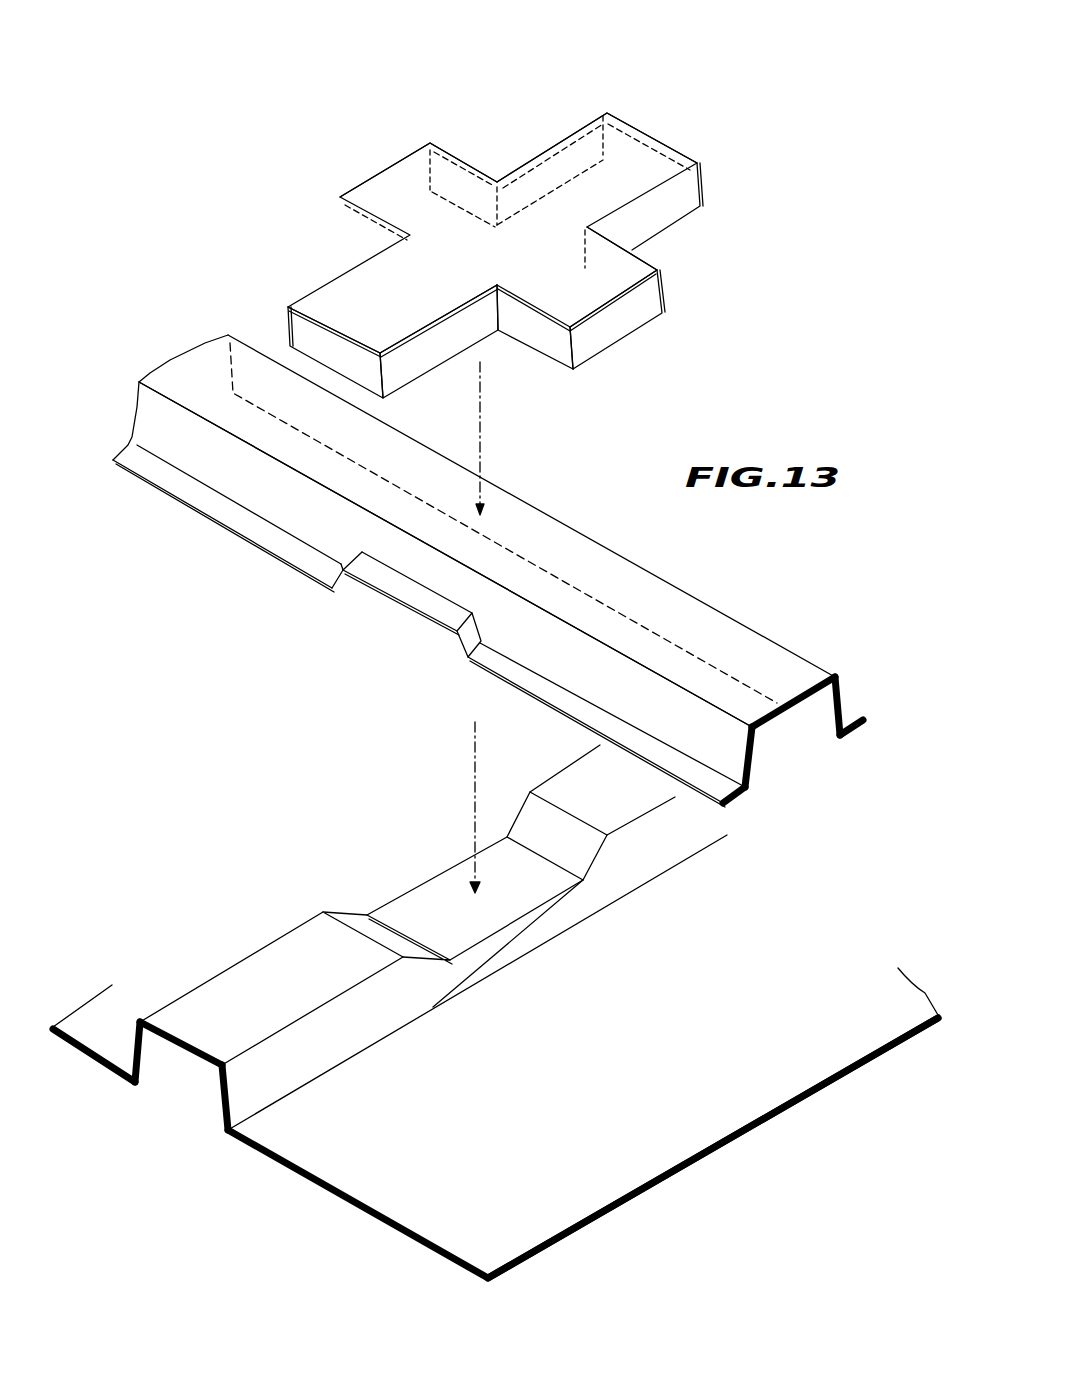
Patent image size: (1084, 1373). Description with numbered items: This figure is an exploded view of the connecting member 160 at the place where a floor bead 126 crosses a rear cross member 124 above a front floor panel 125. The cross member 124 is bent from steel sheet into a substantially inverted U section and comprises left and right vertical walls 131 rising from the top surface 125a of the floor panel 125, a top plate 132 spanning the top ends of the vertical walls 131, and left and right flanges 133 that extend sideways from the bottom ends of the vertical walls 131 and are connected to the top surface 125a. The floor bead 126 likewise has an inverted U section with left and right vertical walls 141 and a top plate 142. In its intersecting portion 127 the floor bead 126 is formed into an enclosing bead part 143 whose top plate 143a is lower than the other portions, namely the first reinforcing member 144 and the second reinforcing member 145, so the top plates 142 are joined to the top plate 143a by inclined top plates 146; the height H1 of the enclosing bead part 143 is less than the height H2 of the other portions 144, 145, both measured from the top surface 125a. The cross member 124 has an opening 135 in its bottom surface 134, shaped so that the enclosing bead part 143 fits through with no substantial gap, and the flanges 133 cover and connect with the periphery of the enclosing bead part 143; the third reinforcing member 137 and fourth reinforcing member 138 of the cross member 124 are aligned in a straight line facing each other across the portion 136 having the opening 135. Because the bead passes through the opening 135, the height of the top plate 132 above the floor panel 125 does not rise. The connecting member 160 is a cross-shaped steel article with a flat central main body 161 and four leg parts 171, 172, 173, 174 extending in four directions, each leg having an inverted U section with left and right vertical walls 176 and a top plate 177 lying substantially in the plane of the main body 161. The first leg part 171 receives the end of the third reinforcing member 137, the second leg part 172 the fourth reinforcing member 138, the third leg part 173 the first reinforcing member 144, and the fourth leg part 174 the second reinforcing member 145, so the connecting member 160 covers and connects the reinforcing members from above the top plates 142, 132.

The connecting member 160 is at (280, 53).
The central main body 161 is at (475, 236).
The first leg part 171 is at (402, 190).
The second leg part 172 is at (552, 259).
The third leg part 173 is at (356, 306).
The fourth leg part 174 is at (626, 157).
The vertical wall 176 is at (300, 321).
The top plate 177 is at (326, 296).
The rear cross member 124 is at (450, 747).
The vertical wall 131 is at (849, 737).
The top plate 132 is at (818, 730).
The flange 133 is at (858, 707).
The bottom surface 134 is at (340, 566).
The opening 135 is at (392, 613).
The portion having the opening 136 is at (386, 548).
The third reinforcing member 137 is at (222, 468).
The fourth reinforcing member 138 is at (476, 657).
The front floor panel 125 is at (523, 1220).
The top surface 125a is at (583, 1181).
The floor bead 126 is at (397, 733).
The intersecting portion 127 is at (495, 1005).
The vertical wall 141 is at (132, 1042).
The top plate 142 is at (211, 1034).
The enclosing bead part 143 is at (409, 912).
The top plate 143a is at (535, 881).
The first reinforcing member 144 is at (278, 963).
The second reinforcing member 145 is at (563, 796).
The inclined top plate 146 is at (588, 839).
The height of the enclosing bead part H1 is at (490, 937).
The height of the other portions H2 is at (222, 1065).